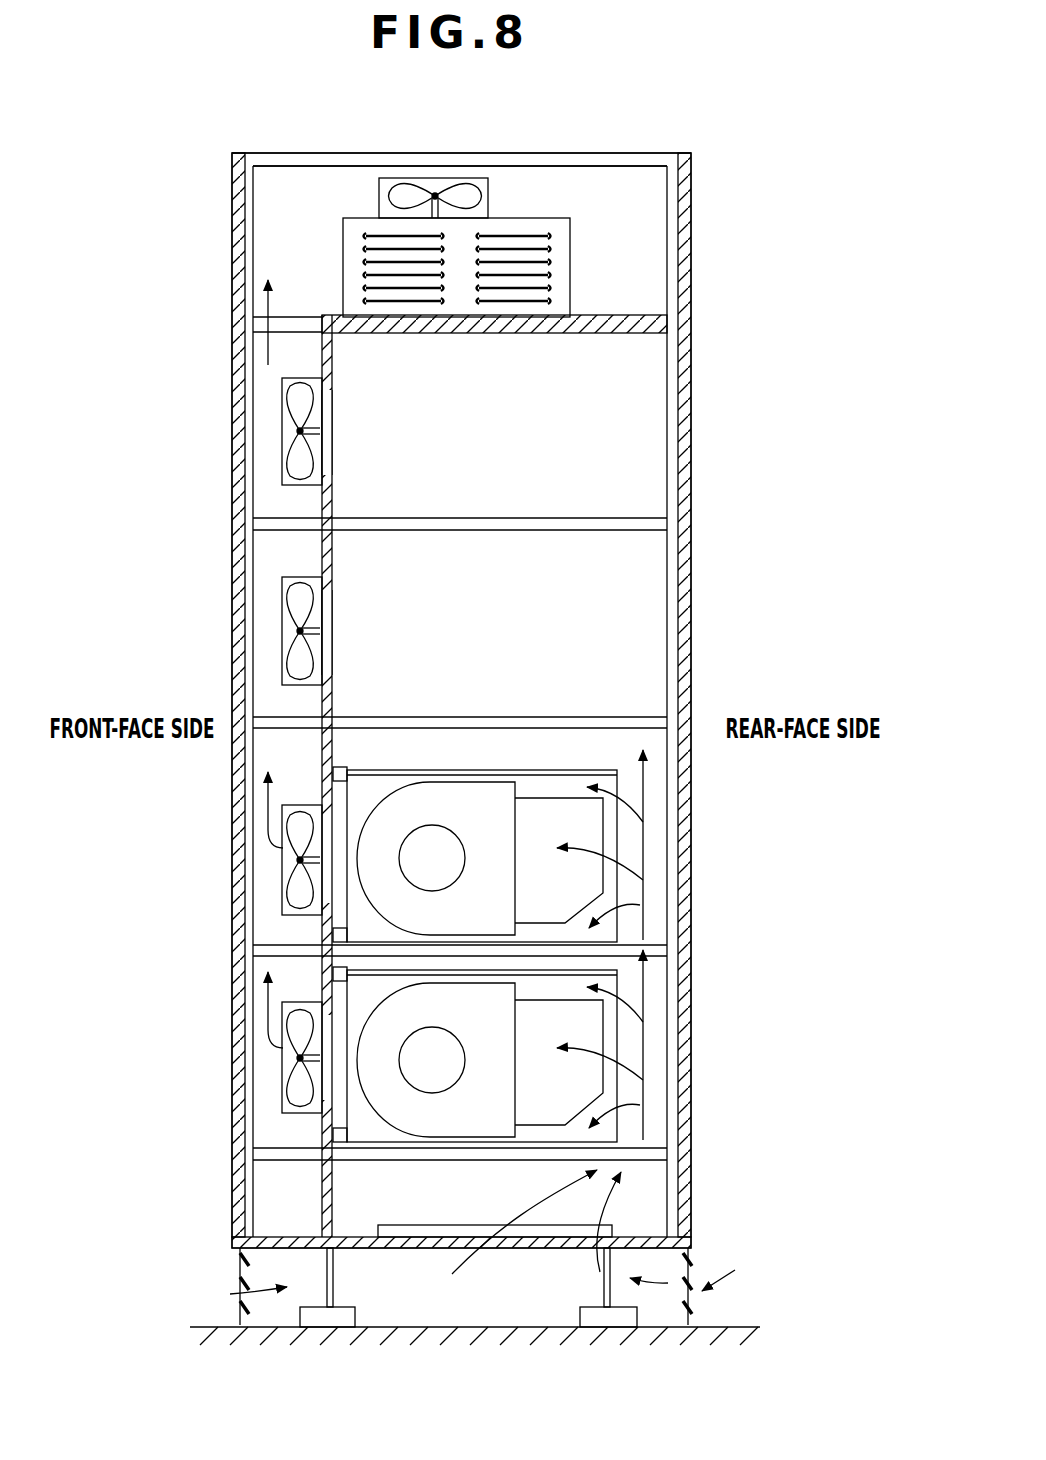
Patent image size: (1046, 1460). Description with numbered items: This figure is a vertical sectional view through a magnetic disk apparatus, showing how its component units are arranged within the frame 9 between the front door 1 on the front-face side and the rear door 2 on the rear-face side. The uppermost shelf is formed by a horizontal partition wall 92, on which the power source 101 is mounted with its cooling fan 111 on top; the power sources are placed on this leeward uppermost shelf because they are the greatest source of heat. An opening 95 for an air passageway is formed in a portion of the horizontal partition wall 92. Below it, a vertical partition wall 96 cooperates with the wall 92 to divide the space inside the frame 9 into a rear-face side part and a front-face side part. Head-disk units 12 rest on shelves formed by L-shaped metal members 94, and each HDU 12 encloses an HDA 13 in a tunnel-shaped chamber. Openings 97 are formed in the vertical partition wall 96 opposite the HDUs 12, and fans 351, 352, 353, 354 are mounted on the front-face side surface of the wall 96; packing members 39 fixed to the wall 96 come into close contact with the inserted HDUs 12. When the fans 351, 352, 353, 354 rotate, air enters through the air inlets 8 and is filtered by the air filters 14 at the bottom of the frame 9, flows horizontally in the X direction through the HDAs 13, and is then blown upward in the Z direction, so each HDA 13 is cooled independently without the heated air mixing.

The front door 1 is at (232, 262).
The rear door 2 is at (691, 420).
The air inlets 8 is at (238, 1262).
The frame 9 is at (622, 153).
The head-disk unit 12 is at (583, 888).
The HDA 13 is at (583, 822).
The air filter 14 is at (416, 1237).
The packing members 39 is at (347, 768).
The horizontal partition wall 92 is at (628, 315).
The L-shaped metal members 94 is at (578, 518).
The opening 95 is at (305, 320).
The vertical partition wall 96 is at (322, 545).
The openings 97 is at (326, 402).
The power source 101 is at (540, 218).
The cooling fan 111 is at (410, 178).
The fan 351 is at (282, 400).
The fan 352 is at (282, 655).
The fan 353 is at (282, 885).
The fan 354 is at (282, 1087).